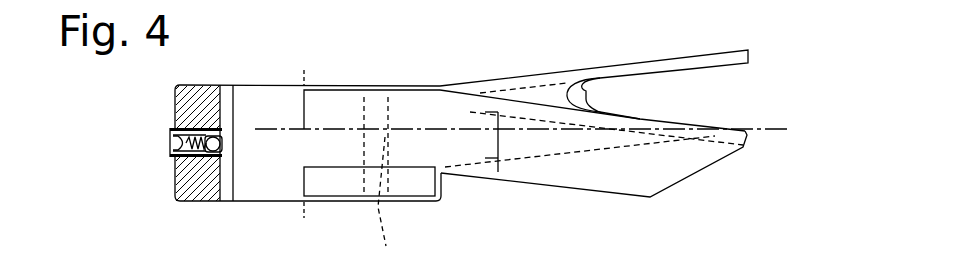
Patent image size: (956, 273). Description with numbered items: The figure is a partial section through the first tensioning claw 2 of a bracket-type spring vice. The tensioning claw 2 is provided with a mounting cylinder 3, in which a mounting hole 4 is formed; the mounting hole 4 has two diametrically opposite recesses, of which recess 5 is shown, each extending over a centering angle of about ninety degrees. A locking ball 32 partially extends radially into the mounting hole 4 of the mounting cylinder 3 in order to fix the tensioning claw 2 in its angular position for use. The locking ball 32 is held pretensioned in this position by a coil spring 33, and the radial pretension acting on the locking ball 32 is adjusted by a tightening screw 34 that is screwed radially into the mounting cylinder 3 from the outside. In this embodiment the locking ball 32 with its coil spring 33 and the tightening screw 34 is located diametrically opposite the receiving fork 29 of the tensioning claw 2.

The first tensioning claw 2 is at (449, 174).
The mounting cylinder 3 is at (193, 205).
The mounting hole 4 is at (222, 112).
The recess 5 is at (284, 104).
The receiving fork 29 is at (698, 75).
The locking ball 32 is at (220, 151).
The coil spring 33 is at (174, 180).
The tightening screw 34 is at (170, 131).